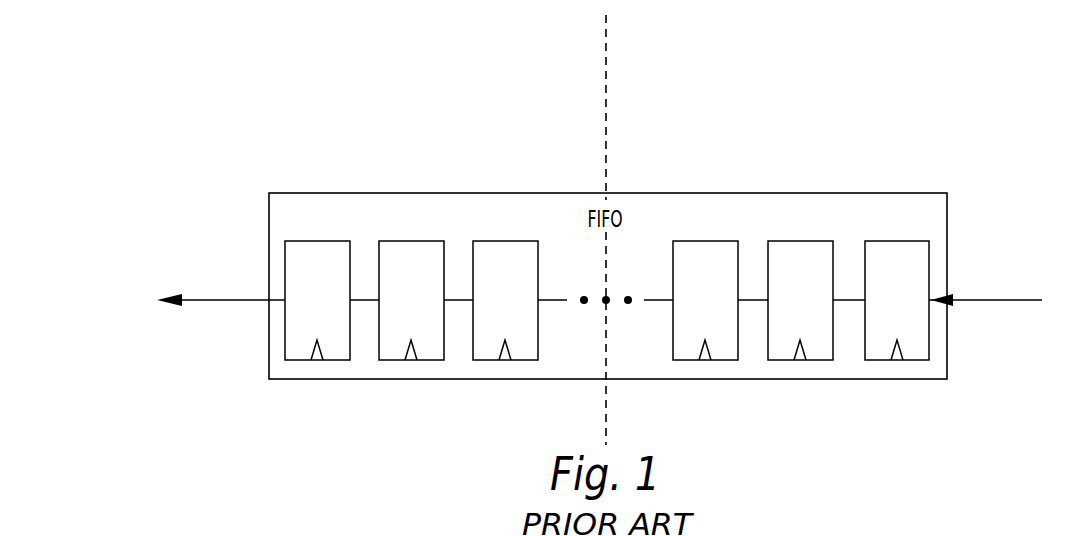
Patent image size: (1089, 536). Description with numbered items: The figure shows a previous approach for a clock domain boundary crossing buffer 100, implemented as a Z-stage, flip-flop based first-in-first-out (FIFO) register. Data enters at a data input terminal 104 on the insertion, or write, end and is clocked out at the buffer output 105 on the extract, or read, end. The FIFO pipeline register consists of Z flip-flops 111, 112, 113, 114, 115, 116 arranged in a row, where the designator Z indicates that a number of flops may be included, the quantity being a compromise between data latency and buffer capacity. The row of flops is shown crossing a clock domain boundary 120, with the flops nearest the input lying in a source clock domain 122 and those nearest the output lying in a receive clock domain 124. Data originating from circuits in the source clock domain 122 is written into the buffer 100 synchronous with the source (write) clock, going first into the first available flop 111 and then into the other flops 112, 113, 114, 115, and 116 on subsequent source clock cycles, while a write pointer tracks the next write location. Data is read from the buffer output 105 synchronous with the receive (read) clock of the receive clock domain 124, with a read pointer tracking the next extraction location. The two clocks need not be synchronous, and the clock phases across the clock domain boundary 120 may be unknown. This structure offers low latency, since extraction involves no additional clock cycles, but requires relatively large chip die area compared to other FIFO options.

The clock domain boundary crossing buffer 100 is at (312, 106).
The data input terminal 104 is at (988, 303).
The buffer output 105 is at (222, 303).
The flip-flop 111 is at (896, 240).
The flip-flop 112 is at (800, 240).
The flip-flop 113 is at (705, 240).
The flip-flop 114 is at (505, 240).
The flip-flop 115 is at (411, 240).
The flip-flop 116 is at (317, 240).
The clock domain boundary 120 is at (612, 32).
The source clock domain 122 is at (766, 75).
The receive clock domain 124 is at (446, 75).